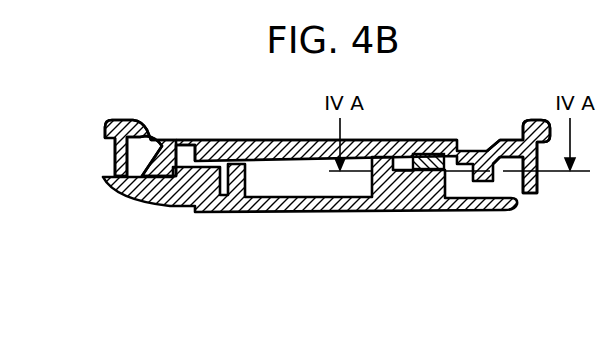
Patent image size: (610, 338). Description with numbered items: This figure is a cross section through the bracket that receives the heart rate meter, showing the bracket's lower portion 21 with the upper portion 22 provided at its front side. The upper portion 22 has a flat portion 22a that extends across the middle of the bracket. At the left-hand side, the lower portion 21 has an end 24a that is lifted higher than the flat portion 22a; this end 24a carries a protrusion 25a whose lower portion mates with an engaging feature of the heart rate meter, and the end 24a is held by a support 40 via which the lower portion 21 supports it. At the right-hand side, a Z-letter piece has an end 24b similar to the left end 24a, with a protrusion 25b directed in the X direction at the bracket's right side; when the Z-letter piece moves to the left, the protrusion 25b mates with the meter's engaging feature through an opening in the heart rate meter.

The lower portion 21 is at (405, 206).
The upper portion 22 is at (427, 140).
The flat portion 22a is at (278, 140).
The end 24a is at (131, 122).
The end 24b is at (533, 196).
The protrusion 25a is at (100, 128).
The protrusion 25b is at (553, 143).
The support 40 is at (114, 159).